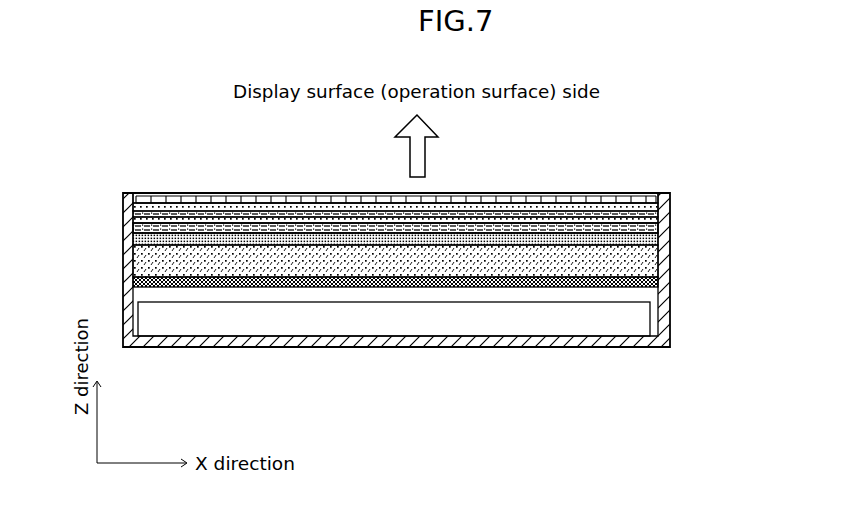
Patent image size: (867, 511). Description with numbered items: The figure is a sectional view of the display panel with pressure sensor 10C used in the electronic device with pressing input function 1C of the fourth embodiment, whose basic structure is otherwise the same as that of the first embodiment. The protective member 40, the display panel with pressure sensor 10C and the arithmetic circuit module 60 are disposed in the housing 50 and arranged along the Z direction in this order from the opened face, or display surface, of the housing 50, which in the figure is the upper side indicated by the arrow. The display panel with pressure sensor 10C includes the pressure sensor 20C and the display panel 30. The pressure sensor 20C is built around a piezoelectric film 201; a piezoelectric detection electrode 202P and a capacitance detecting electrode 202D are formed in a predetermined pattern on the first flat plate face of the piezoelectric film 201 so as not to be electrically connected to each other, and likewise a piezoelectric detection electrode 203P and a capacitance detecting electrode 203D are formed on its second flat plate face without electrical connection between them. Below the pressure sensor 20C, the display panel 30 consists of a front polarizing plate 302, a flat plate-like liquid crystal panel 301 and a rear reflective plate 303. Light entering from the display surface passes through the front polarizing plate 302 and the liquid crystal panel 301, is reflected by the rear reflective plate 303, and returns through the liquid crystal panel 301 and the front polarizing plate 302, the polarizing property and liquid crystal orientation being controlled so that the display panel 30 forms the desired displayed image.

The electronic device with pressing input function 1C is at (190, 153).
The display panel with pressure sensor 10C is at (716, 156).
The pressure sensor 20C is at (792, 172).
The display panel 30 is at (72, 240).
The protective member 40 is at (240, 198).
The housing 50 is at (671, 339).
The arithmetic circuit module 60 is at (462, 326).
The piezoelectric film 201 is at (660, 222).
The capacitance detecting electrode 202D is at (643, 208).
The piezoelectric detection electrode 202P is at (643, 215).
The piezoelectric detection electrode 203P is at (660, 230).
The capacitance detecting electrode 203D is at (660, 230).
The liquid crystal panel 301 is at (133, 262).
The front polarizing plate 302 is at (133, 240).
The rear reflective plate 303 is at (133, 283).